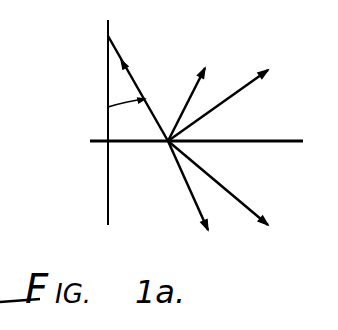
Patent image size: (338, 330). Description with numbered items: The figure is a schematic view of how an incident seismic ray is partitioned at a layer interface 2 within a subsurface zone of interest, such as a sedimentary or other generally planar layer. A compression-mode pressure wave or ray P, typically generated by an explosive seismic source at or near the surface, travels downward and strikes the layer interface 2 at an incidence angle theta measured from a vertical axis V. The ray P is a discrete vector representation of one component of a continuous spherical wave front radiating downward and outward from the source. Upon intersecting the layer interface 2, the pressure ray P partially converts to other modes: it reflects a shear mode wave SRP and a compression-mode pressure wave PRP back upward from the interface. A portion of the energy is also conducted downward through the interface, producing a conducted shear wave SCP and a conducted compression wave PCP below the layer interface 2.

The layer interface 2 is at (267, 140).
The compression-mode pressure wave or ray P is at (118, 50).
The vertical axis V is at (106, 84).
The incidence angle theta is at (126, 114).
The reflected shear mode wave SRP is at (193, 88).
The reflected compression-mode pressure wave PRP is at (250, 84).
The conducted shear wave SCP is at (190, 190).
The conducted compression wave PCP is at (243, 203).